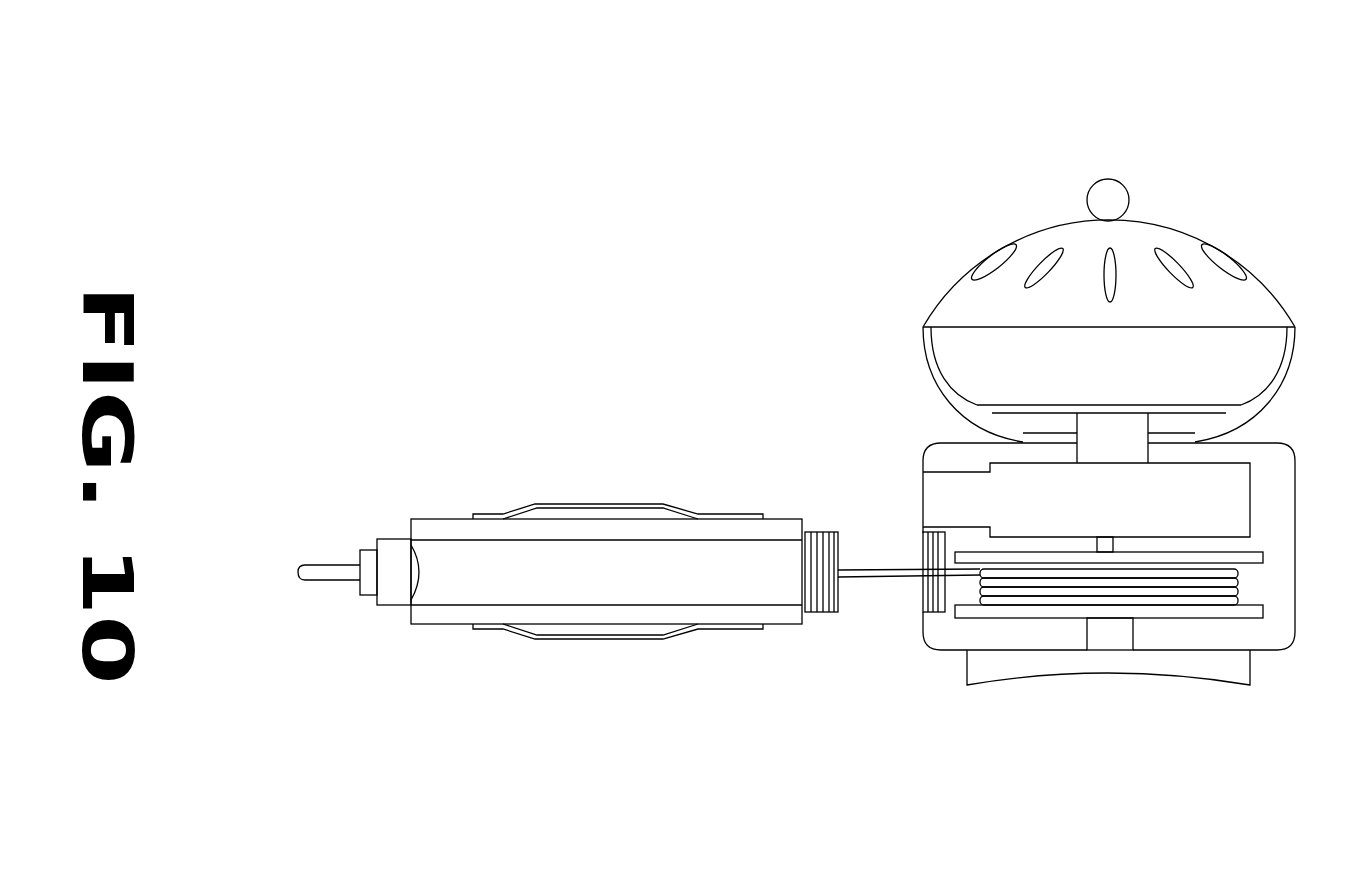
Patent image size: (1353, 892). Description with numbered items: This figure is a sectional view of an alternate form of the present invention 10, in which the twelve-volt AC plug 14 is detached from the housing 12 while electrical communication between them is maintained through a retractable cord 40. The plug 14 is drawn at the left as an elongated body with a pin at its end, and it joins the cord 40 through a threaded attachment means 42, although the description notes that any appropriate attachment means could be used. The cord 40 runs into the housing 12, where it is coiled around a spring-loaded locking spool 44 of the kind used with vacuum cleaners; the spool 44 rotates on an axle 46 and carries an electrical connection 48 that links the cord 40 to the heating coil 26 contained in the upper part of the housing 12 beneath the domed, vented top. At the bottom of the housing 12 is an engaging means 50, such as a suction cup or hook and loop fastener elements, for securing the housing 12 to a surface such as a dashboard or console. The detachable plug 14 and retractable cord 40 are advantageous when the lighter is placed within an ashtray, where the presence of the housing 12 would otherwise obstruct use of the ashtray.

The present invention 10 is at (1217, 215).
The housing 12 is at (1292, 493).
The 12 VAC plug 14 is at (449, 624).
The heating coil 26 is at (1045, 487).
The retractable cord 40 is at (879, 571).
The threaded attachment means 42 is at (927, 536).
The spring-loaded locking spool 44 is at (1007, 618).
The axle 46 is at (1087, 636).
The electrical connection 48 is at (1088, 540).
The engaging means 50 is at (1165, 678).